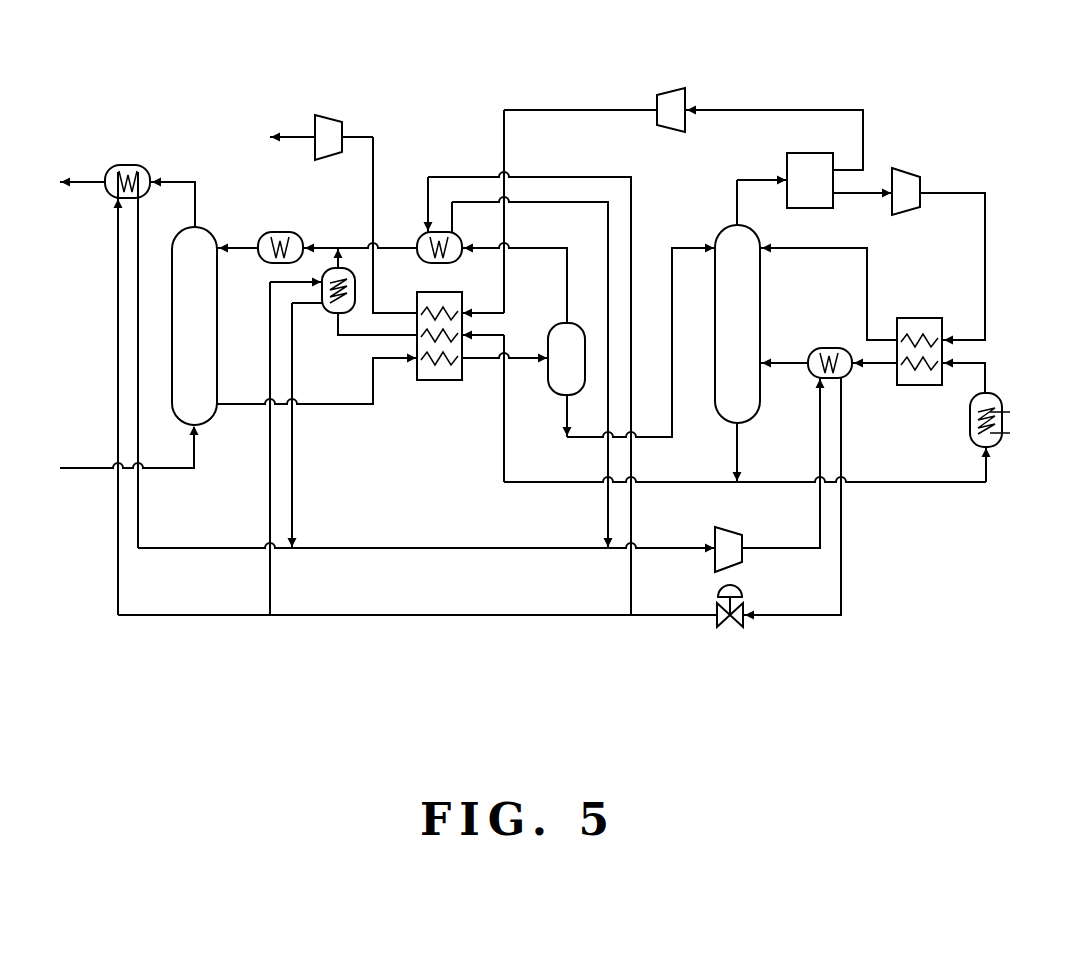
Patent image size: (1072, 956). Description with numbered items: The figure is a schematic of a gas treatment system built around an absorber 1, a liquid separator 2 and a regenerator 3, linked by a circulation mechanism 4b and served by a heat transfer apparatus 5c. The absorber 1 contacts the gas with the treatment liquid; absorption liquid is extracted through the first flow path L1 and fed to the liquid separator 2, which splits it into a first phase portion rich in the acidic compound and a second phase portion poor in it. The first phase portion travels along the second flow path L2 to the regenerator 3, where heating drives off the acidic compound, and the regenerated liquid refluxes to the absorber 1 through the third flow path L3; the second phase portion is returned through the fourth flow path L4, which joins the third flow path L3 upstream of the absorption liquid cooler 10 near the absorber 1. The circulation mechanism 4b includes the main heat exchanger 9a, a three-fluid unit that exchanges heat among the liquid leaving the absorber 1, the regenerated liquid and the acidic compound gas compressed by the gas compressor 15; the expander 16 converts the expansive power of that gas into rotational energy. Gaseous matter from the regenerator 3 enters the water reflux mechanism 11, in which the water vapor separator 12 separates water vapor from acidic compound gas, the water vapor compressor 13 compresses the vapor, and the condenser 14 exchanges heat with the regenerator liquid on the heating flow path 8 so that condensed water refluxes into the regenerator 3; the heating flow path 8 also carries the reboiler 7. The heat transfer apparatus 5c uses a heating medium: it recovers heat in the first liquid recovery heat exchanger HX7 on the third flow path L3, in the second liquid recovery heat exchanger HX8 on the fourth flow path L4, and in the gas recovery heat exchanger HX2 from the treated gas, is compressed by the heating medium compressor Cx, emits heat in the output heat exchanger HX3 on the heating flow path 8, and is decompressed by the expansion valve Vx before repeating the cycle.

The absorber 1 is at (207, 228).
The liquid separator 2 is at (556, 323).
The regenerator 3 is at (727, 228).
The reboiler 7 is at (970, 420).
The heating flow path 8 is at (915, 483).
The main heat exchanger 9a is at (440, 381).
The absorption liquid cooler 10 is at (262, 264).
The water reflux mechanism 11 is at (958, 192).
The water vapor separator 12 is at (787, 160).
The water vapor compressor 13 is at (908, 170).
The condenser 14 is at (920, 318).
The gas compressor 15 is at (668, 92).
The expander 16 is at (335, 116).
The circulation mechanism 4b is at (407, 233).
The heat transfer apparatus 5c is at (435, 538).
The gas recovery heat exchanger HX2 is at (127, 165).
The output heat exchanger HX3 is at (830, 348).
The first liquid recovery heat exchanger HX7 is at (333, 315).
The second liquid recovery heat exchanger HX8 is at (436, 264).
The first flow path L1 is at (353, 405).
The second flow path L2 is at (672, 247).
The third flow path L3 is at (540, 483).
The fourth flow path L4 is at (530, 247).
The heating medium compressor Cx is at (716, 530).
The expansion valve Vx is at (716, 612).